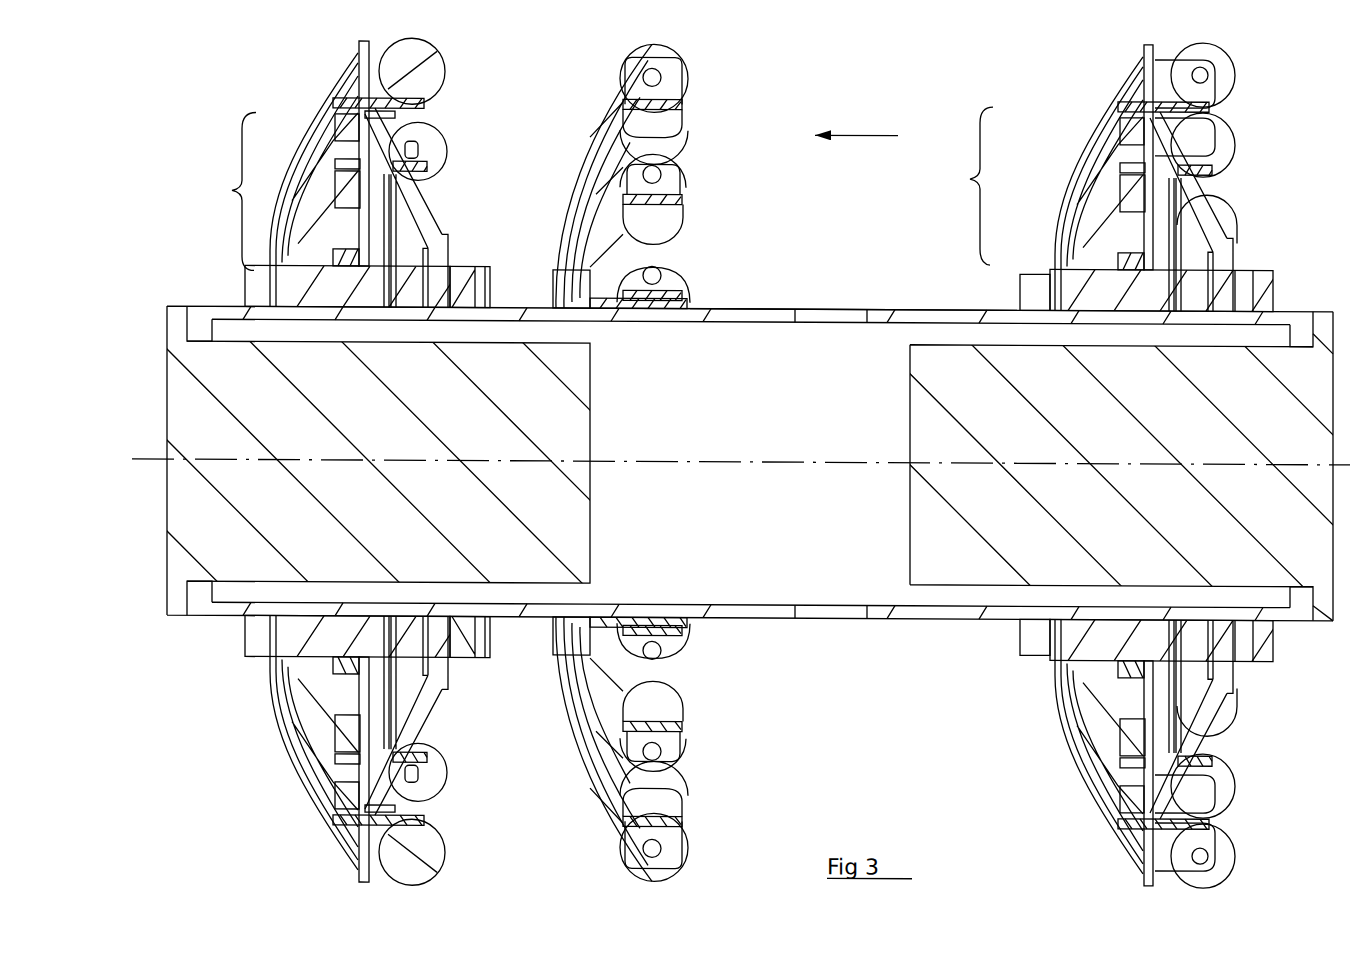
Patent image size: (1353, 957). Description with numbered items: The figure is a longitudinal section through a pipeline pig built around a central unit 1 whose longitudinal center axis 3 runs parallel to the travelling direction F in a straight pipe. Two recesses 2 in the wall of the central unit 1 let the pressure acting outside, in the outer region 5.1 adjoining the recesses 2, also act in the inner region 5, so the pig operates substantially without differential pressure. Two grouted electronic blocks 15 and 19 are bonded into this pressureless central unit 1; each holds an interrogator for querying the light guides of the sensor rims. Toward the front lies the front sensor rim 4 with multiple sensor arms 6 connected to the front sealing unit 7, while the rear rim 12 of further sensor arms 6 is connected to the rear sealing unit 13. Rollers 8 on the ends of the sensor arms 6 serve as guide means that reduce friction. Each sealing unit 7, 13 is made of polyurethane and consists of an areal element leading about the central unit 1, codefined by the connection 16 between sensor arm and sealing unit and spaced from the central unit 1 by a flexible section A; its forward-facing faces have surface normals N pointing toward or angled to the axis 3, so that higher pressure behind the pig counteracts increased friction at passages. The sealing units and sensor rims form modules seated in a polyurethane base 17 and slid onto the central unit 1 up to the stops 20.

The central unit 1 is at (950, 313).
The recesses 2 is at (827, 316).
The longitudinal center axis 3 is at (786, 456).
The front sensor rim 4 is at (280, 768).
The inner region 5 is at (748, 348).
The outer region 5.1 is at (772, 230).
The sensor arms 6 is at (272, 232).
The front sealing unit 7 is at (368, 248).
The rollers 8 is at (437, 70).
The rear rim 12 is at (1189, 176).
The rear sealing unit 13 is at (1212, 235).
The electronic block 15 is at (932, 354).
The connection 16 is at (382, 173).
The base 17 is at (252, 288).
The electronic block 19 is at (567, 413).
The stops 20 is at (466, 283).
The flexible section A is at (592, 188).
The surface normals N is at (306, 148).
The travelling direction F is at (856, 121).